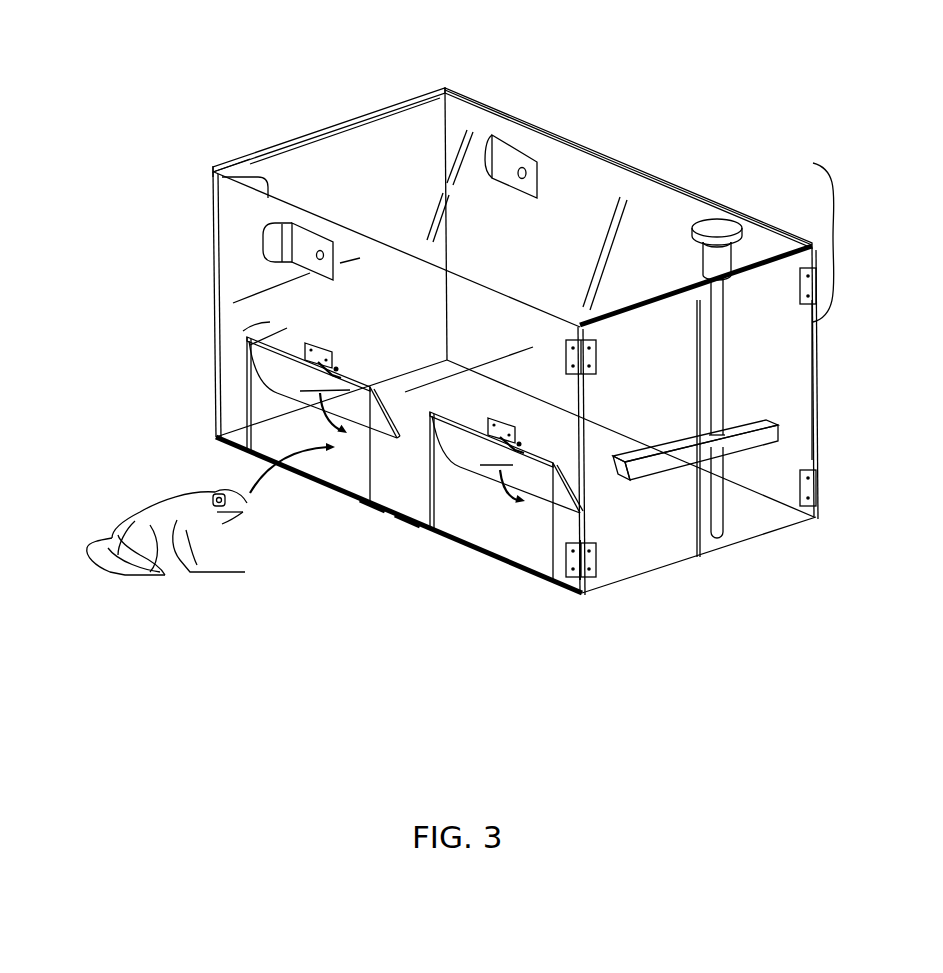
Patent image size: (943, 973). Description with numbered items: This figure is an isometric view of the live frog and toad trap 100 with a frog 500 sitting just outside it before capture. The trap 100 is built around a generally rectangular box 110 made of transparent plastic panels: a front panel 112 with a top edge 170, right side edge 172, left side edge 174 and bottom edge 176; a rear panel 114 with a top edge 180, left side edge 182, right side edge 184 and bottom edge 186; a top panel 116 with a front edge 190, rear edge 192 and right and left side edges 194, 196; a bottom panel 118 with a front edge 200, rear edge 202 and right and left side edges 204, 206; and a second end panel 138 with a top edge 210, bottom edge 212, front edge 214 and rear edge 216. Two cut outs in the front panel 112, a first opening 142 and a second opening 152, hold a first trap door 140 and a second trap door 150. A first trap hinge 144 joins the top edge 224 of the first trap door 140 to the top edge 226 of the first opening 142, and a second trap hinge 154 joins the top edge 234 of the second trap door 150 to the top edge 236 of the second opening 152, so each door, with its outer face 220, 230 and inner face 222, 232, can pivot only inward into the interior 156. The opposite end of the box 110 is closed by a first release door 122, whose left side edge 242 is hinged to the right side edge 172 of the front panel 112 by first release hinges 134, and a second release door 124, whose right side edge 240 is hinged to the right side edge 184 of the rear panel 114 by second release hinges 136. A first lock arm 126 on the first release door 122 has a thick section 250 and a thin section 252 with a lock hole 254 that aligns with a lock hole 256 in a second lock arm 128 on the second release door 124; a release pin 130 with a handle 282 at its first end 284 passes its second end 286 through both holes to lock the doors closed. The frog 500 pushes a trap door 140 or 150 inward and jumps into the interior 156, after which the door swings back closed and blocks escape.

The trap 100 is at (437, 333).
The box 110 is at (437, 349).
The front panel 112 is at (243, 320).
The rear panel 114 is at (603, 185).
The top panel 116 is at (405, 112).
The bottom panel 118 is at (643, 565).
The first release door 122 is at (648, 545).
The second release door 124 is at (772, 527).
The first lock arm 126 is at (624, 480).
The second lock arm 128 is at (757, 420).
The release pin 130 is at (701, 379).
The first release hinges 134 is at (598, 352).
The second release hinges 136 is at (798, 292).
The second end panel 138 is at (325, 133).
The first trap door 140 is at (227, 383).
The first opening 142 is at (227, 397).
The first trap hinge 144 is at (318, 346).
The second trap door 150 is at (431, 471).
The second opening 152 is at (437, 489).
The second trap hinge 154 is at (497, 424).
The interior 156 is at (348, 470).
The top edge 170 is at (215, 228).
The right side edge 172 is at (568, 585).
The left side edge 174 is at (218, 258).
The bottom edge 176 is at (406, 522).
The top edge 180 is at (538, 130).
The left side edge 182 is at (460, 120).
The right side edge 184 is at (775, 252).
The bottom edge 186 is at (793, 500).
The front edge 190 is at (232, 188).
The rear edge 192 is at (652, 193).
The right side edge 194 is at (760, 243).
The left side edge 196 is at (376, 116).
The front edge 200 is at (372, 514).
The rear edge 202 is at (590, 423).
The right side edge 204 is at (752, 530).
The left side edge 206 is at (437, 363).
The top edge 210 is at (252, 158).
The bottom edge 212 is at (393, 378).
The front edge 214 is at (218, 293).
The rear edge 216 is at (457, 118).
The outer face 220 is at (243, 384).
The inner face 222 is at (403, 425).
The top edge 224 is at (288, 362).
The top edge 226 is at (302, 357).
The outer face 230 is at (440, 532).
The inner face 232 is at (527, 450).
The top edge 234 is at (446, 432).
The top edge 236 is at (477, 430).
The right side edge 240 is at (806, 239).
The left side edge 242 is at (600, 563).
The thick section 250 is at (701, 451).
The thin section 252 is at (706, 428).
The lock hole 254 is at (727, 430).
The lock hole 256 is at (727, 455).
The handle 282 is at (713, 220).
The first end 284 is at (703, 283).
The second end 286 is at (713, 540).
The frog 500 is at (178, 582).